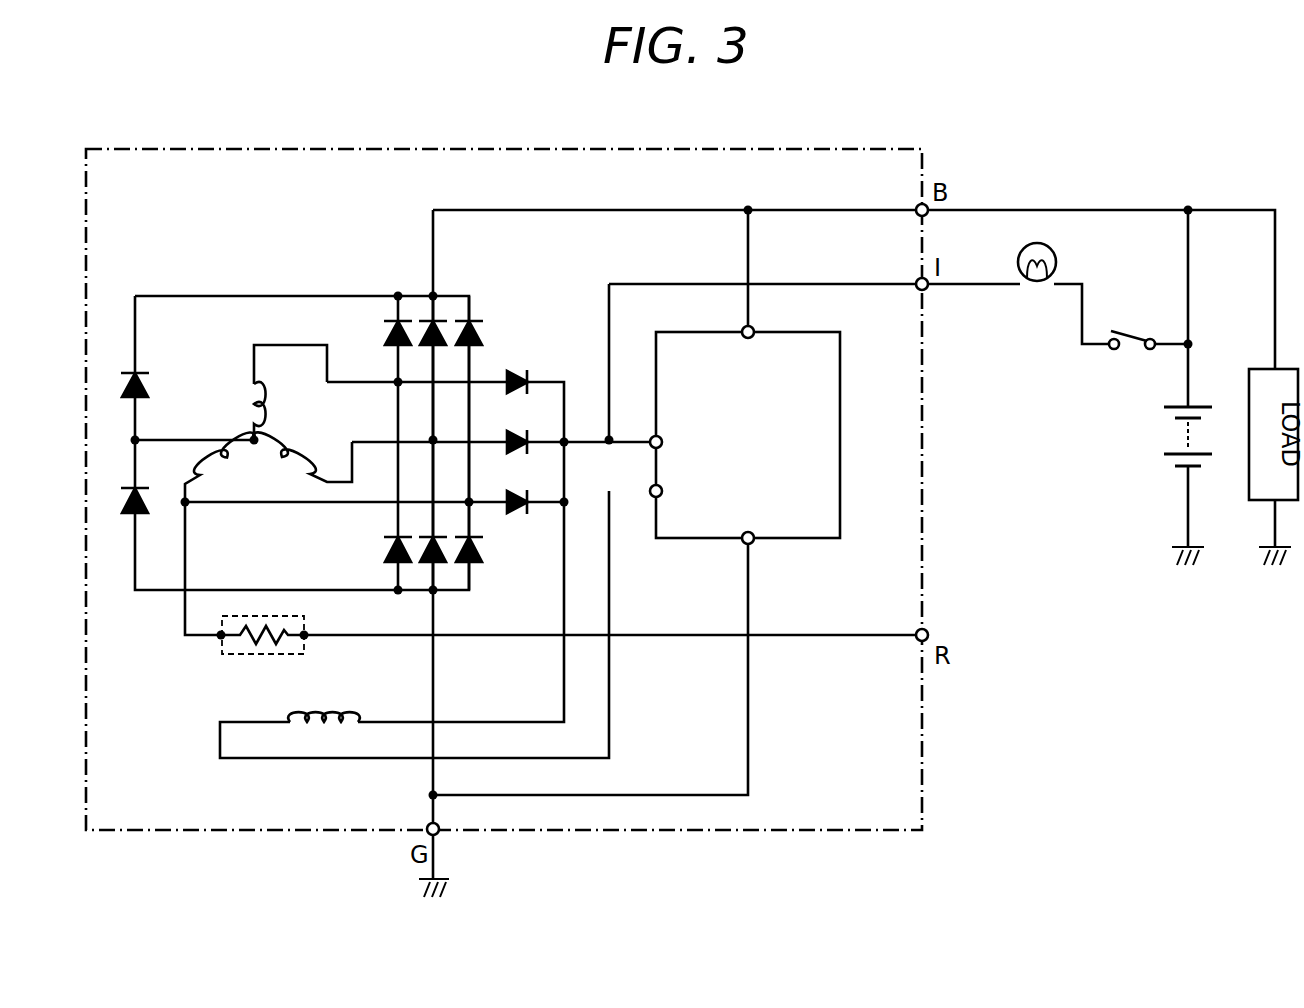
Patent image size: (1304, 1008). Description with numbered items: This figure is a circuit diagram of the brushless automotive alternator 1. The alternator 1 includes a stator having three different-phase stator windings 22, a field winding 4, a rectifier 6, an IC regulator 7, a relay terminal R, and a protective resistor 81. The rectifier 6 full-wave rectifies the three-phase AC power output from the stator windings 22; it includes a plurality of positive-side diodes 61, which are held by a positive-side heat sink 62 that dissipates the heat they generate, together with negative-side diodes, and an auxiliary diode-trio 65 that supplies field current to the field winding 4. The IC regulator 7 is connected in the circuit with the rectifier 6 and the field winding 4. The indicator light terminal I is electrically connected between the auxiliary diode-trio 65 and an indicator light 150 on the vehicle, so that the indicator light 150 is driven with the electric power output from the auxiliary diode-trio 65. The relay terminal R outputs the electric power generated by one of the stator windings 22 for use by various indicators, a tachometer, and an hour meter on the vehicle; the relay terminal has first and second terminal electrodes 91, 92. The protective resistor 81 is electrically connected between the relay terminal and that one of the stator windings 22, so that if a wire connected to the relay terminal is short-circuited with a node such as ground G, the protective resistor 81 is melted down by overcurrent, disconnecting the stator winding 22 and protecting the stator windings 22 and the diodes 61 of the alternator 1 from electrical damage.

The alternator 1 is at (866, 149).
The field winding 4 is at (297, 708).
The rectifier 6 is at (503, 300).
The IC regulator 7 is at (841, 340).
The stator windings 22 is at (290, 462).
The positive-side diodes 61 is at (456, 338).
The positive-side heat sink 62 is at (390, 548).
The auxiliary diode-trio 65 is at (517, 370).
The protective resistor 81 is at (295, 617).
The first terminal electrode 91 is at (218, 641).
The second terminal electrode 92 is at (308, 640).
The indicator light 150 is at (1057, 256).